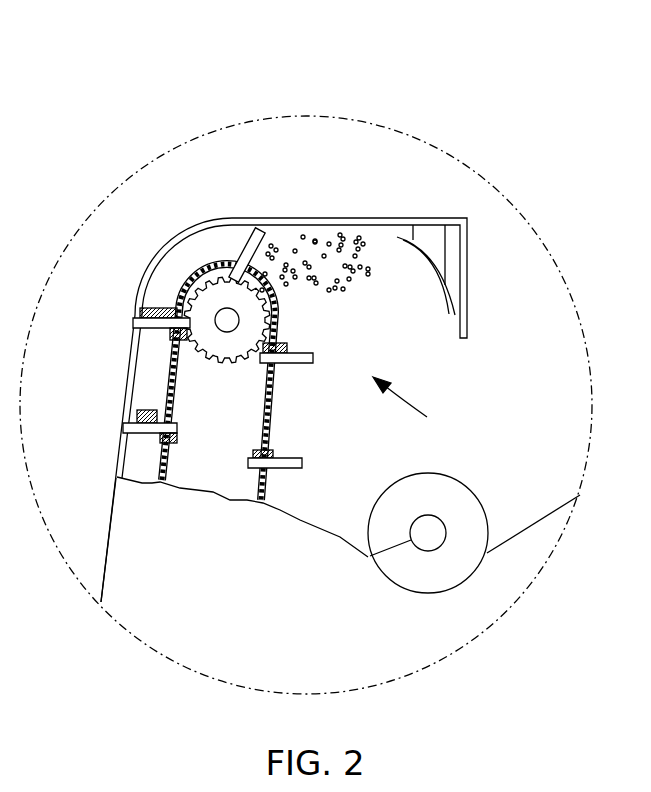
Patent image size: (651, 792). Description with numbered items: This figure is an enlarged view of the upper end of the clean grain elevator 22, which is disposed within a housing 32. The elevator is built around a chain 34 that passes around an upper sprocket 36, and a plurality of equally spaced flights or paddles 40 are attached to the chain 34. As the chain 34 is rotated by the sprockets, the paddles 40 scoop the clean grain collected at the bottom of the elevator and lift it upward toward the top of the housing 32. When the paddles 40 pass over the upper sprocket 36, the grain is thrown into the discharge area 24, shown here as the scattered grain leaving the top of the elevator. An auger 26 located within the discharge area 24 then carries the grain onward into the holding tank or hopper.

The clean grain elevator 22 is at (130, 608).
The discharge area 24 is at (413, 403).
The auger 26 is at (467, 518).
The housing 32 is at (115, 454).
The chain 34 is at (172, 362).
The upper sprocket 36 is at (220, 365).
The flights or paddles 40 is at (248, 243).